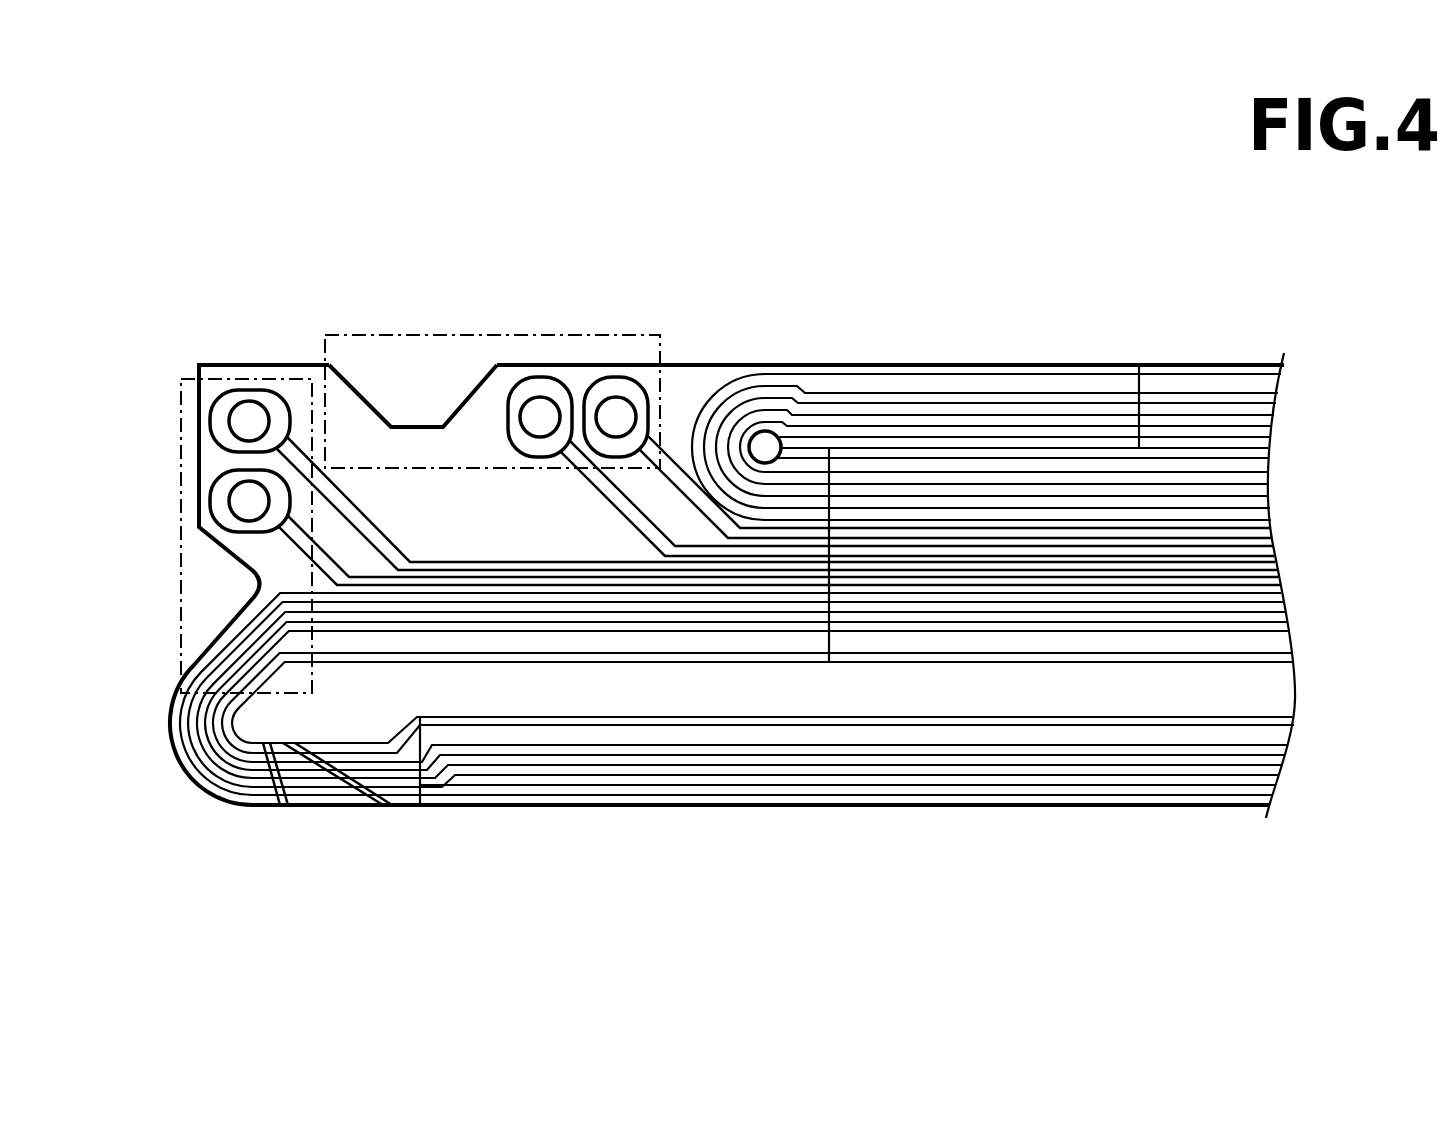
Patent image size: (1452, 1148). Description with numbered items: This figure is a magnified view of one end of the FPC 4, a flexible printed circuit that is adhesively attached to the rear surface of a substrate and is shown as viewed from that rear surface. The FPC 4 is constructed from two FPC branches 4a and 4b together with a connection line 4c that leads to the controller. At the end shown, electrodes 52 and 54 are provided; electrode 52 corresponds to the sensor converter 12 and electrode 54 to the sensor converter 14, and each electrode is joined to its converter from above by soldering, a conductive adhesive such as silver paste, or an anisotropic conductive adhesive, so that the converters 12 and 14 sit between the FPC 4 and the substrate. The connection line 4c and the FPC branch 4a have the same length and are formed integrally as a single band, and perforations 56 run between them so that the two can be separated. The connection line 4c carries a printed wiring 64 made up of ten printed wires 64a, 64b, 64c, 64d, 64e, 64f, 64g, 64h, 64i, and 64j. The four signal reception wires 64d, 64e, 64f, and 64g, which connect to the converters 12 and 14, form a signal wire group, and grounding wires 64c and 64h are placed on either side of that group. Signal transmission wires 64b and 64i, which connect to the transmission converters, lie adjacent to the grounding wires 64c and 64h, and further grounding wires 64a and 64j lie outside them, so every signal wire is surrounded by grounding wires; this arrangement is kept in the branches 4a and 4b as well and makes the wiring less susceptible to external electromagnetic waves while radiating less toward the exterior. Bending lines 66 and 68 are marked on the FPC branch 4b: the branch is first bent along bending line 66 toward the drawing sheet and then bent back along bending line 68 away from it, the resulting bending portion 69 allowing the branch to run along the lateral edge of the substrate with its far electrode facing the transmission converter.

The FPC 4 is at (770, 283).
The FPC branch 4a is at (931, 366).
The FPC branch 4b is at (490, 806).
The connection line 4c is at (934, 663).
The converter 12 is at (421, 333).
The converter 14 is at (181, 592).
The electrode 52 is at (615, 383).
The electrode 54 is at (219, 421).
The perforations 56 is at (890, 447).
The printed wiring 64 is at (1388, 417).
The grounding wire 64a is at (1253, 433).
The signal wire 64b is at (1253, 495).
The grounding wire 64c is at (1253, 517).
The signal reception wire 64d is at (1253, 532).
The signal reception wire 64e is at (1253, 548).
The signal reception wire 64f is at (1253, 564).
The signal reception wire 64g is at (1253, 582).
The grounding wire 64h is at (1253, 599).
The signal wire 64i is at (1253, 617).
The grounding wire 64j is at (1253, 642).
The bending line 66 is at (275, 806).
The bending line 68 is at (357, 806).
The bending portion 69 is at (370, 866).